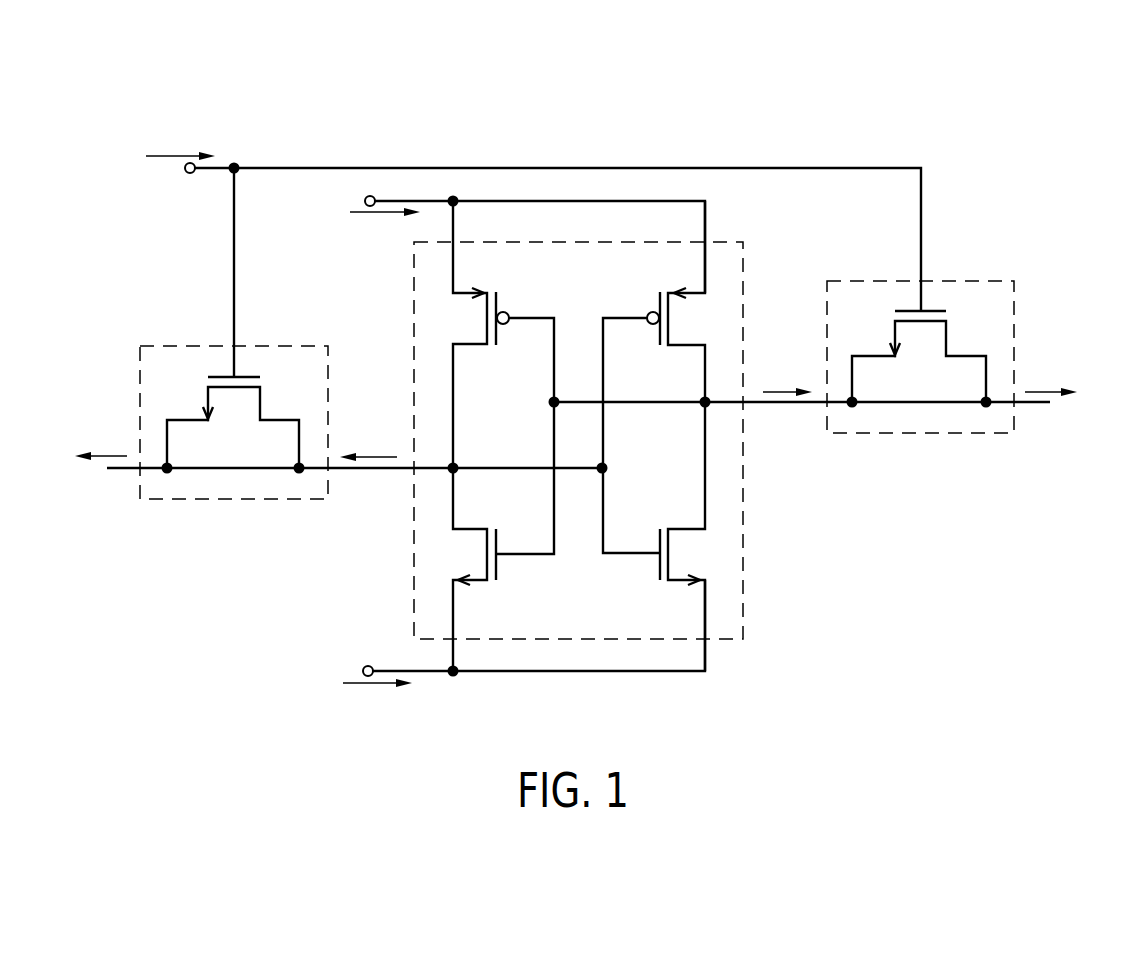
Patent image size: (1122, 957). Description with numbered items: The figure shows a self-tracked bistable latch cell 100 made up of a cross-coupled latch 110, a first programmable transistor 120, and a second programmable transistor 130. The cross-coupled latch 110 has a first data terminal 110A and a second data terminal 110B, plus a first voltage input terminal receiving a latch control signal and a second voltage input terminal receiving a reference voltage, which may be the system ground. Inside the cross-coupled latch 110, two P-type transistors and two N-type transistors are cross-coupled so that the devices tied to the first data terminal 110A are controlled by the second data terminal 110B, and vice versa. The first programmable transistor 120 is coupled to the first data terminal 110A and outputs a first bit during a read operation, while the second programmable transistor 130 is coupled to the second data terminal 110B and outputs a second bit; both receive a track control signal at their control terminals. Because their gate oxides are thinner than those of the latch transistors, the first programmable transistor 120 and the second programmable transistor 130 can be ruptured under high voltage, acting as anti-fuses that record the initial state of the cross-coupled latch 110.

The self-tracked bistable latch cell 100 is at (975, 118).
The cross-coupled latch 110 is at (745, 597).
The first data terminal 110A is at (457, 466).
The second data terminal 110B is at (702, 405).
The first programmable transistor 120 is at (216, 499).
The second programmable transistor 130 is at (902, 433).